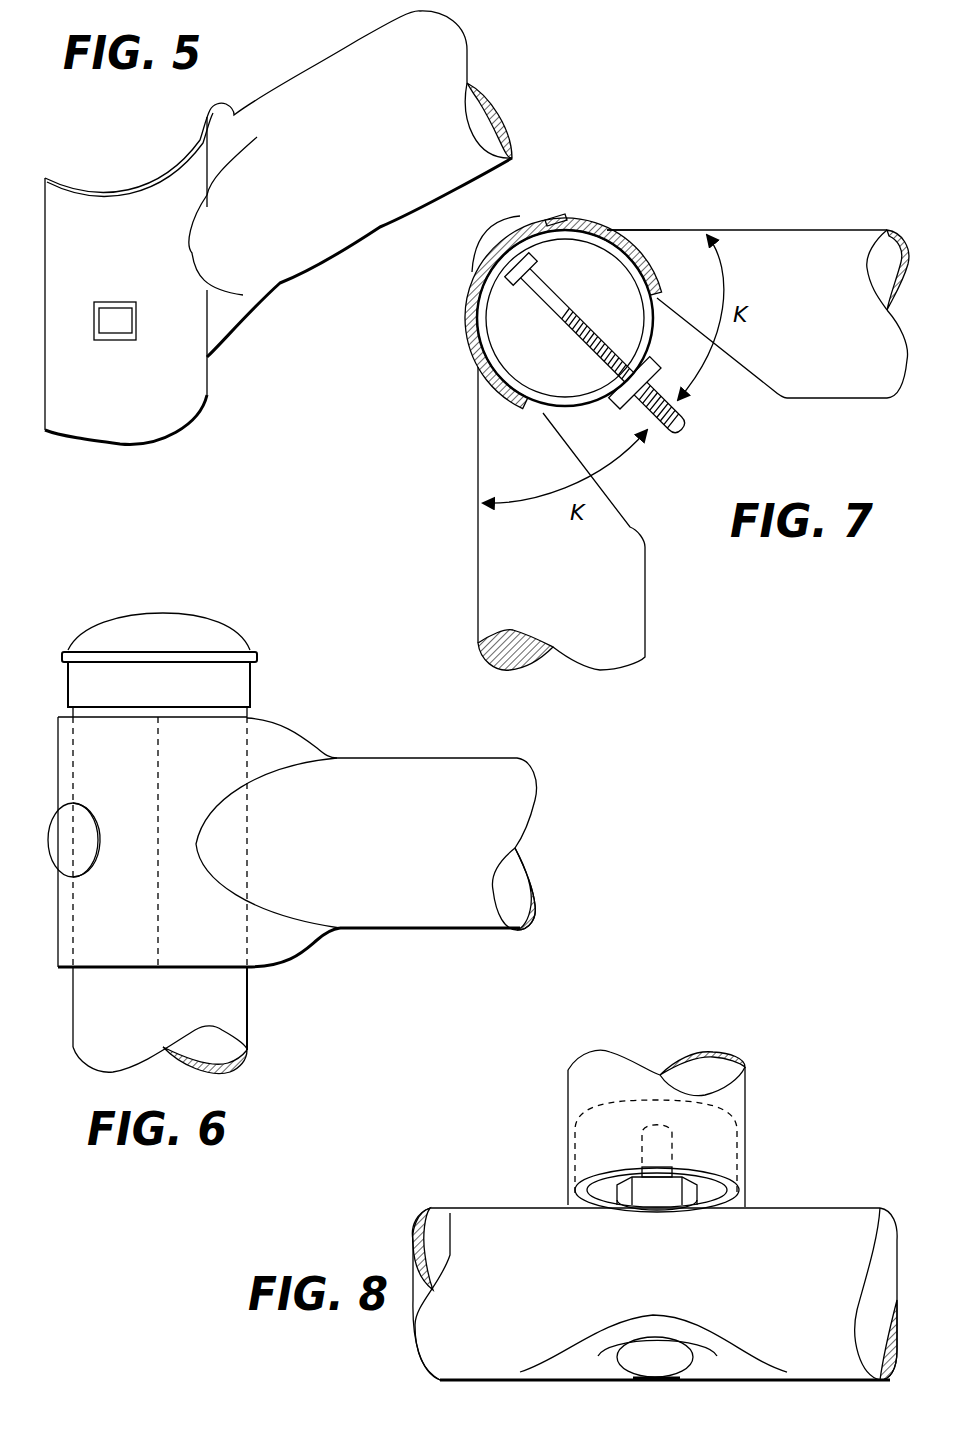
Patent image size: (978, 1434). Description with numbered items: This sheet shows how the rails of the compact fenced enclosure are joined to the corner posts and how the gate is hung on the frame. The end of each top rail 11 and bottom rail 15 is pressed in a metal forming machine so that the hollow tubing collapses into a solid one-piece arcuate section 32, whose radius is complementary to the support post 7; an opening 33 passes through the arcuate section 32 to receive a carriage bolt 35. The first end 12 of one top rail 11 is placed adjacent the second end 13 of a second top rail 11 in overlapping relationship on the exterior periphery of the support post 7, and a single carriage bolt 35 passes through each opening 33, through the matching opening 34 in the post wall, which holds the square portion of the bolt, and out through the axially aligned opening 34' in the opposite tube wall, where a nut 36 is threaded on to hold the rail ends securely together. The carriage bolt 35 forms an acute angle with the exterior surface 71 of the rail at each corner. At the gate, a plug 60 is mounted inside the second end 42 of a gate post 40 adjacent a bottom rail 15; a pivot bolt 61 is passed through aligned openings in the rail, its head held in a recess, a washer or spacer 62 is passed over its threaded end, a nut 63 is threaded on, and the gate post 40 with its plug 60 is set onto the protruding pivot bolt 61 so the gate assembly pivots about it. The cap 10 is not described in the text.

In FIG. 6, the support post 7 is at (247, 713).
In FIG. 6, the end cap 10 is at (145, 615).
In FIG. 5, the top rail 11 is at (340, 213).
In FIG. 7, the top rail 11 is at (878, 387).
In FIG. 6, the top rail 11 is at (467, 923).
In FIG. 5, the first end 12 is at (227, 135).
In FIG. 7, the first end 12 is at (478, 397).
In FIG. 6, the first end 12 is at (300, 777).
In FIG. 7, the second end 13 is at (670, 230).
In FIG. 8, the bottom rail 15 is at (873, 1223).
In FIG. 5, the arcuate section 32 is at (187, 415).
In FIG. 7, the arcuate section 32 is at (543, 215).
In FIG. 6, the arcuate section 32 is at (158, 937).
In FIG. 5, the opening 33 is at (114, 340).
In FIG. 7, the opening 34 is at (569, 321).
In FIG. 7, the opening 34' is at (647, 367).
In FIG. 6, the carriage bolt 35 is at (77, 862).
In FIG. 7, the nut 36 is at (612, 403).
In FIG. 8, the gate post 40 is at (703, 1067).
In FIG. 8, the second end 42 is at (745, 1160).
In FIG. 8, the plug 60 is at (593, 1195).
In FIG. 8, the pivot bolt 61 is at (643, 1355).
In FIG. 8, the washer or spacer 62 is at (648, 1198).
In FIG. 8, the nut 63 is at (657, 1187).
In FIG. 7, the exterior surface 71 is at (762, 230).